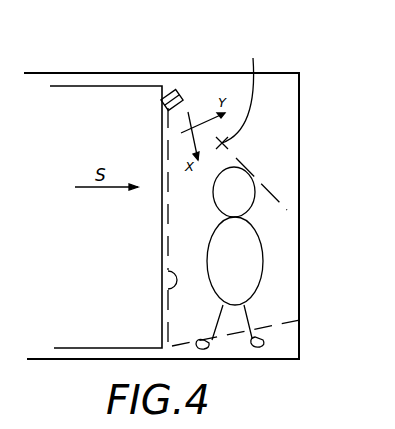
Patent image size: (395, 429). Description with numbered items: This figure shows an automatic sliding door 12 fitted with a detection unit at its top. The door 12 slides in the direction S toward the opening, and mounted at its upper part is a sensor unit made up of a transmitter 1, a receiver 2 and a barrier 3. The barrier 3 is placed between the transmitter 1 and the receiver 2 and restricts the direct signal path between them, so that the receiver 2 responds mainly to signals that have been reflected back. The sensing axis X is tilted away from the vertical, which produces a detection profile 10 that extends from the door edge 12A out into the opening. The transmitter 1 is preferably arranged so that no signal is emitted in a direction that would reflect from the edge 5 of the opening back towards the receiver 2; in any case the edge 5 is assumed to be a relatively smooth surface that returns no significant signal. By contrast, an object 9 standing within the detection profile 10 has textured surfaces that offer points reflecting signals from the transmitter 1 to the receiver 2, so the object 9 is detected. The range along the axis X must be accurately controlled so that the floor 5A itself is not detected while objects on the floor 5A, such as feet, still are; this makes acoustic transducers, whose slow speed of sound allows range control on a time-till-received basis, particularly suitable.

The transmitter 1 is at (165, 104).
The receiver 2 is at (172, 94).
The barrier 3 is at (168, 92).
The edge 5 is at (299, 222).
The floor 5A is at (235, 359).
The object 9 is at (243, 273).
The detection profile 10 is at (242, 95).
The automatic sliding door 12 is at (139, 243).
The door edge 12A is at (166, 288).